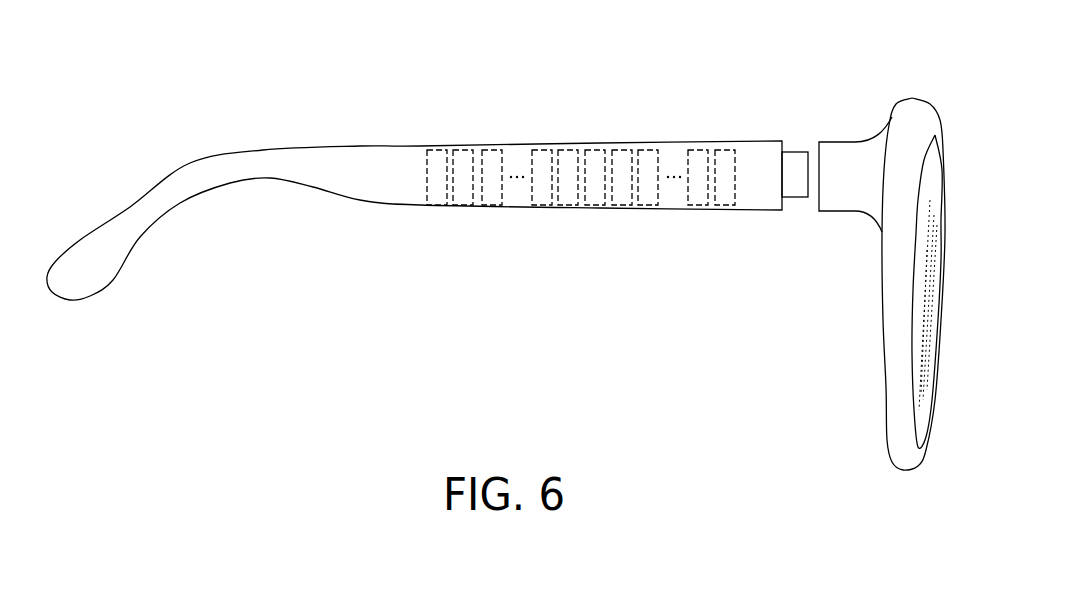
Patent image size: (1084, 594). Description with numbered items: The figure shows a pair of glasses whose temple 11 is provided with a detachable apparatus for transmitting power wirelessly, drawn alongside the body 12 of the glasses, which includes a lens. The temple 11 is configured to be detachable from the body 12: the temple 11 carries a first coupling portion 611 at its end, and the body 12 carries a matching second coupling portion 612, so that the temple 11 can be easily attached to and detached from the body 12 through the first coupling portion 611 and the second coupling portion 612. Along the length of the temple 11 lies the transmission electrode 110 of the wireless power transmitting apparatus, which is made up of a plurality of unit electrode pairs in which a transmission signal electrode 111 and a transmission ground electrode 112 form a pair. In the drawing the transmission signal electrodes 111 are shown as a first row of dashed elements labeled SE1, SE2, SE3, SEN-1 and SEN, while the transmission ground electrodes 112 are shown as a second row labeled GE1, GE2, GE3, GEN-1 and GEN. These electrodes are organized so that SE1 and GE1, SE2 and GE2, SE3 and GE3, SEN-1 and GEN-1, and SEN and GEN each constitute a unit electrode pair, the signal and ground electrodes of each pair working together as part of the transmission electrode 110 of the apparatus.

The temple of glasses 11 is at (317, 157).
The body of glasses 12 is at (918, 115).
The transmission electrode 110 is at (737, 133).
The transmission signal electrode 111 is at (470, 253).
The transmission ground electrode 112 is at (687, 253).
The first coupling portion 611 is at (797, 153).
The second coupling portion 612 is at (845, 152).
The first transmission signal electrode SE1 is at (437, 205).
The second transmission signal electrode SE2 is at (463, 205).
The third transmission signal electrode SE3 is at (490, 205).
The (N-1)th transmission signal electrode SEN-1 is at (543, 205).
The Nth transmission signal electrode SEN is at (551, 217).
The first transmission ground electrode GE1 is at (595, 207).
The second transmission ground electrode GE2 is at (622, 207).
The third transmission ground electrode GE3 is at (648, 207).
The (N-1)th transmission ground electrode GEN-1 is at (698, 207).
The Nth transmission ground electrode GEN is at (753, 217).